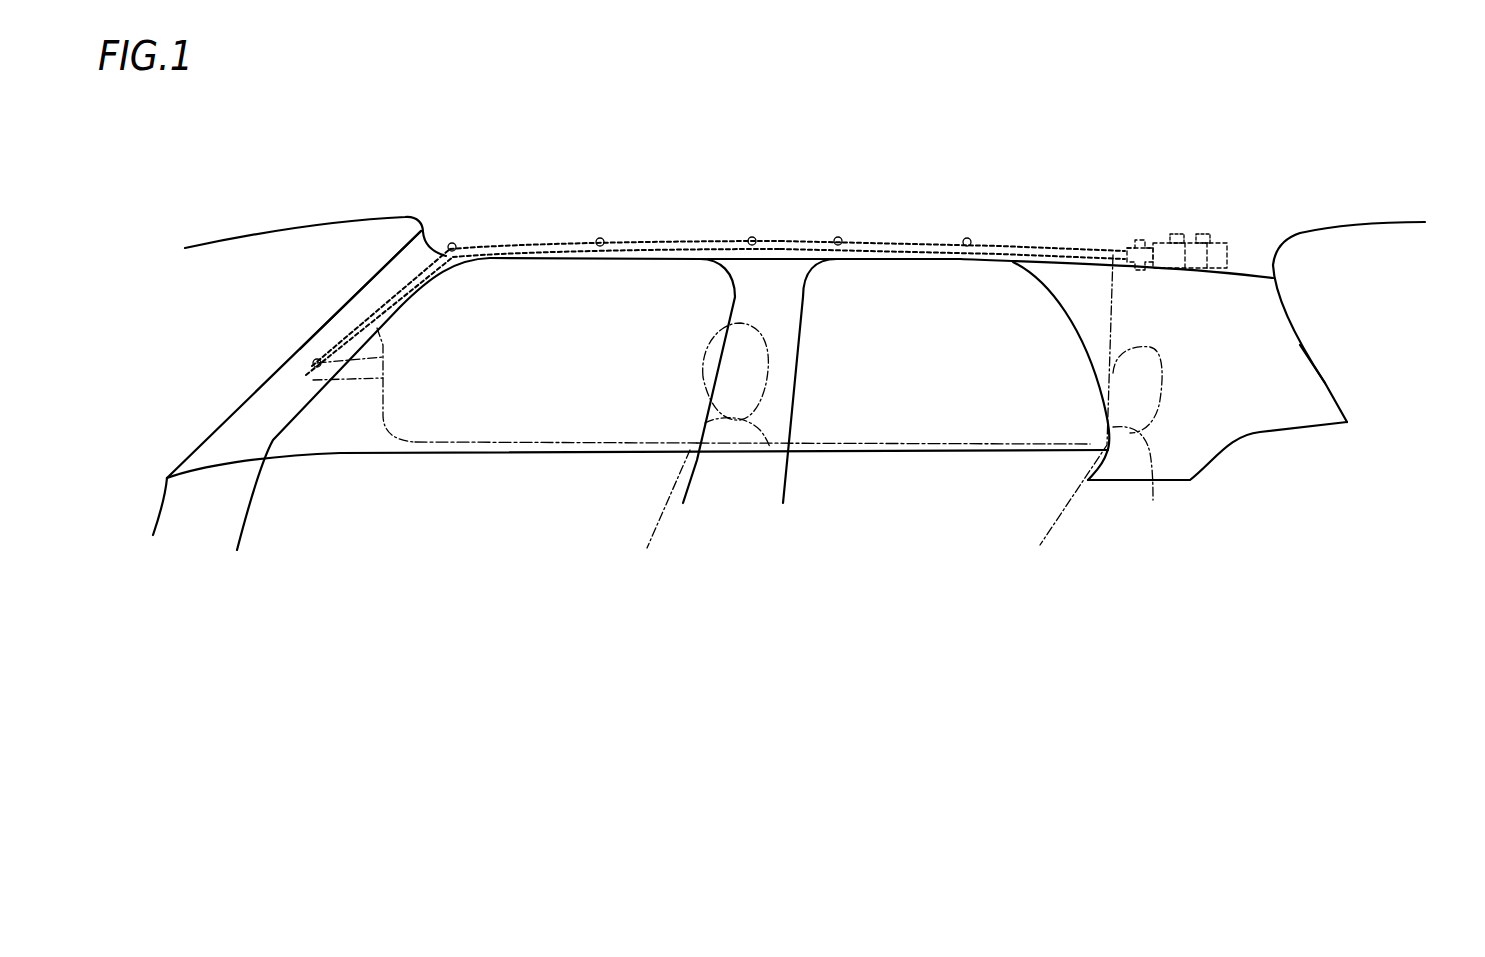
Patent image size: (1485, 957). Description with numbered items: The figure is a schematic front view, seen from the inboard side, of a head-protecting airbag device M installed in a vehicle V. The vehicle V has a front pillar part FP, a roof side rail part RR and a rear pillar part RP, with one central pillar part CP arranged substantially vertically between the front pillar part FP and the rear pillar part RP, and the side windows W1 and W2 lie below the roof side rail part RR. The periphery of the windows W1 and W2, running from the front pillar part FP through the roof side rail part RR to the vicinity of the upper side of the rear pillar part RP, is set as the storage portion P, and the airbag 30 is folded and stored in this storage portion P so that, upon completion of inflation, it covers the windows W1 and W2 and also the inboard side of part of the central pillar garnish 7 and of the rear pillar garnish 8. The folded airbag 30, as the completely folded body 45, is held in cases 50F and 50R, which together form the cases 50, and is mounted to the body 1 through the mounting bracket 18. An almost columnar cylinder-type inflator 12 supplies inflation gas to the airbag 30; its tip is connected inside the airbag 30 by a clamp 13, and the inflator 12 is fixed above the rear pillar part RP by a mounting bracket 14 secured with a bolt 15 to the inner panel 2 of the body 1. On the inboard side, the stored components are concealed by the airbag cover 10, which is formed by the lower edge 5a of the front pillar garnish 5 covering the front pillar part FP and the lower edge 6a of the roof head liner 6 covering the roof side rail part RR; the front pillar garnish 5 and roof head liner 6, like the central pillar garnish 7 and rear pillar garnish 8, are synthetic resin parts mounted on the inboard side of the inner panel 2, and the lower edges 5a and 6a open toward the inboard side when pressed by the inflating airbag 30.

The body 1 is at (715, 226).
The inner panel 2 is at (715, 226).
The front pillar garnish 5 is at (260, 407).
The lower edge of front pillar garnish 5a is at (270, 432).
The roof head liner 6 is at (915, 250).
The lower edge of roof head liner 6a is at (937, 263).
The central pillar garnish 7 is at (780, 387).
The rear pillar garnish 8 is at (1273, 347).
The airbag cover 10 is at (313, 385).
The inflator 12 is at (1247, 230).
The clamp 13 is at (1137, 235).
The mounting bracket 14 is at (1195, 282).
The bolt 15 is at (1200, 233).
The mounting bracket 18 is at (449, 240).
The airbag 30 is at (553, 448).
The completely folded body 45 is at (562, 262).
The case 50 is at (787, 168).
The front case 50F is at (543, 240).
The rear case 50R is at (952, 170).
The central pillar part CP is at (800, 421).
The front pillar part FP is at (277, 355).
The head-protecting airbag device M is at (1243, 165).
The storage portion P is at (1020, 238).
The rear pillar part RP is at (1325, 378).
The roof side rail part RR is at (1075, 242).
The vehicle V is at (1343, 160).
The window W1 is at (380, 443).
The window W2 is at (970, 433).